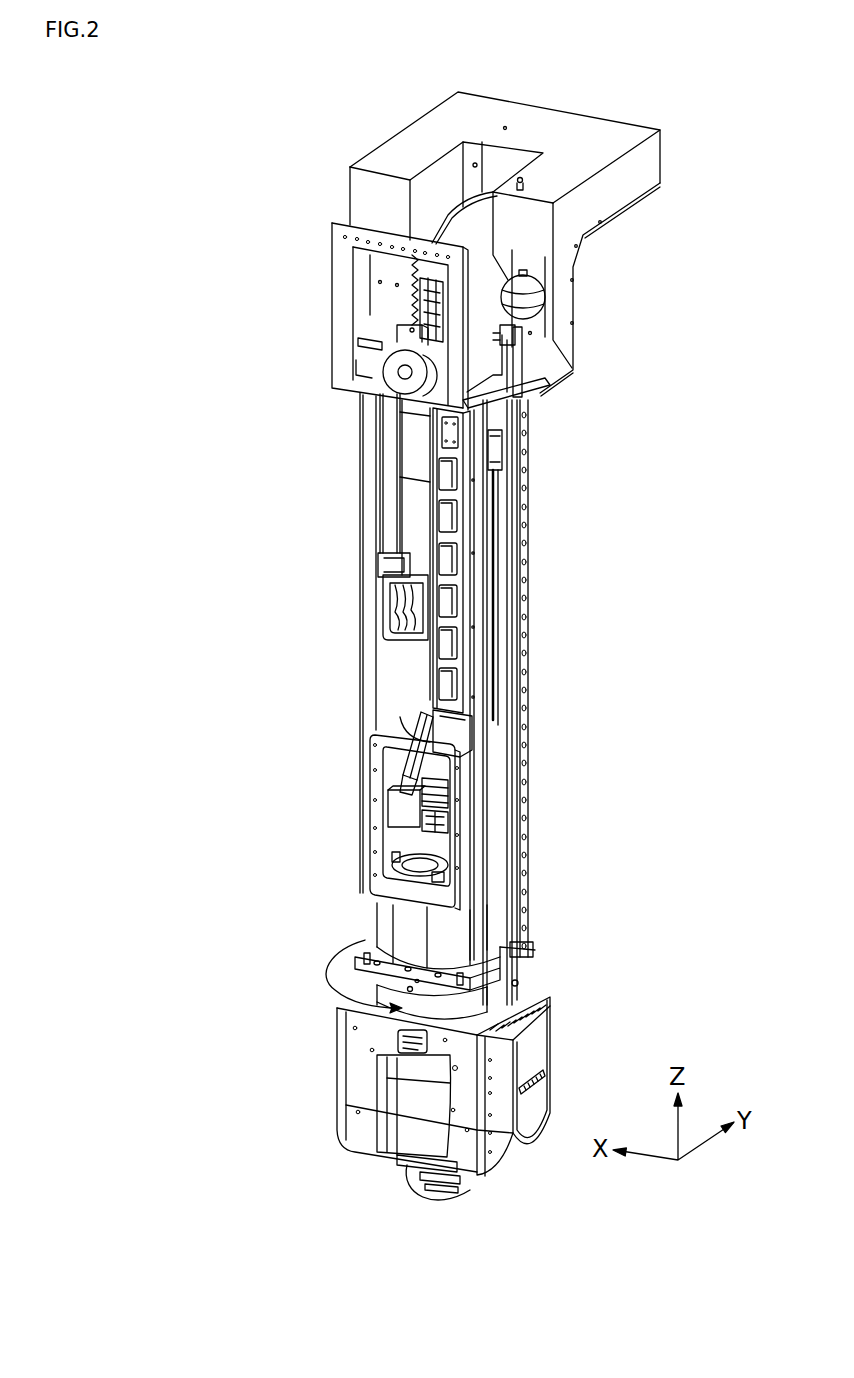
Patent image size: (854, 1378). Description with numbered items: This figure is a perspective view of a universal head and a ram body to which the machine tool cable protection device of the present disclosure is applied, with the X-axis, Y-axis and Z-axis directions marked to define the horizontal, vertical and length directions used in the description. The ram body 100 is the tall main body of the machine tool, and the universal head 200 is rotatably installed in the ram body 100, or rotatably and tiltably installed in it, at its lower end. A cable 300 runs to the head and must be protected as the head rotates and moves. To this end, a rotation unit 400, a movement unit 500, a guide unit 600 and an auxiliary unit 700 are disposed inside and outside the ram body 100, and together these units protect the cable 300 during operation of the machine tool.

The ram body 100 is at (348, 617).
The universal head 200 is at (332, 1052).
The cable 300 is at (403, 758).
The rotation unit 400 is at (445, 783).
The movement unit 500 is at (375, 443).
The guide unit 600 is at (445, 816).
The auxiliary unit 700 is at (455, 725).